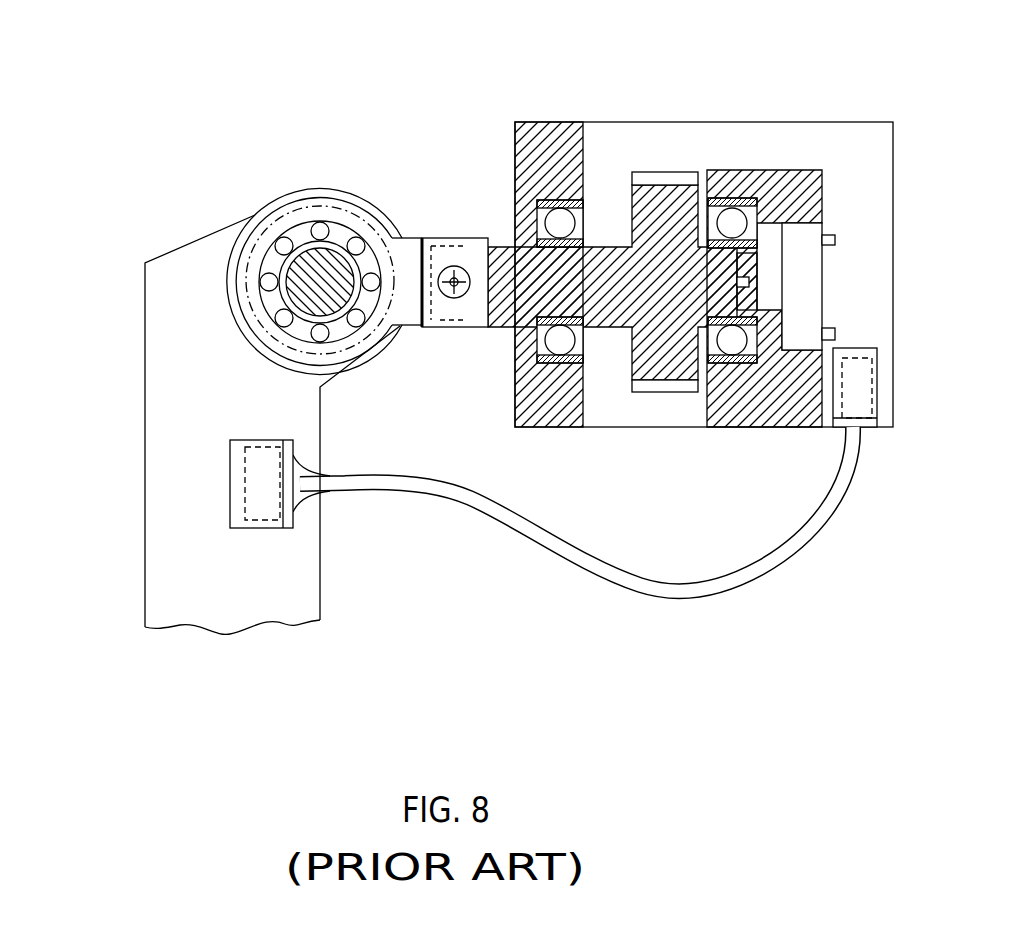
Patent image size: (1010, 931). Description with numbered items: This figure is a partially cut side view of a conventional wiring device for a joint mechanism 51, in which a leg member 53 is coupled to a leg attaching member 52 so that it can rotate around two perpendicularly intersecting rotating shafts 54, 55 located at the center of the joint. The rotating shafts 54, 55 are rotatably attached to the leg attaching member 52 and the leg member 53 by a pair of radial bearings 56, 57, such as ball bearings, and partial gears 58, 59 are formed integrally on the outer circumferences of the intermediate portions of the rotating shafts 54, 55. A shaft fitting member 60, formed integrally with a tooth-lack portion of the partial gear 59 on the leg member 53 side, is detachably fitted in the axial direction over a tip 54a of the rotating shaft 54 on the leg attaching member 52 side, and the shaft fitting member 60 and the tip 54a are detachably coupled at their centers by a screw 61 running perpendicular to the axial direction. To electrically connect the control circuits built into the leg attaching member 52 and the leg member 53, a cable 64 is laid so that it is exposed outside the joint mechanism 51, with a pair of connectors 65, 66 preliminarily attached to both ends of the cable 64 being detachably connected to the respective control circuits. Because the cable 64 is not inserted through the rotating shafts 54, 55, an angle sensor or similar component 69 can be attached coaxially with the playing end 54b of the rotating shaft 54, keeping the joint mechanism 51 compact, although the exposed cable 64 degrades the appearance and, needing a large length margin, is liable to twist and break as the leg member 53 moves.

The joint mechanism 51 is at (423, 118).
The leg attaching member 52 is at (875, 137).
The leg member 53 is at (157, 326).
The rotating shaft 54 is at (737, 264).
The tip of the rotating shaft 54a is at (462, 246).
The playing end of the rotating shaft 54b is at (757, 253).
The rotating shaft 55 is at (303, 250).
The radial bearing 56 is at (737, 264).
The radial bearing 57 is at (268, 250).
The partial gear 58 is at (660, 385).
The partial gear 59 is at (333, 200).
The shaft fitting member 60 is at (445, 255).
The screw 61 is at (455, 300).
The cable 64 is at (660, 595).
The connector 65 is at (868, 428).
The connector 66 is at (318, 497).
The rotation detector 69 is at (807, 292).